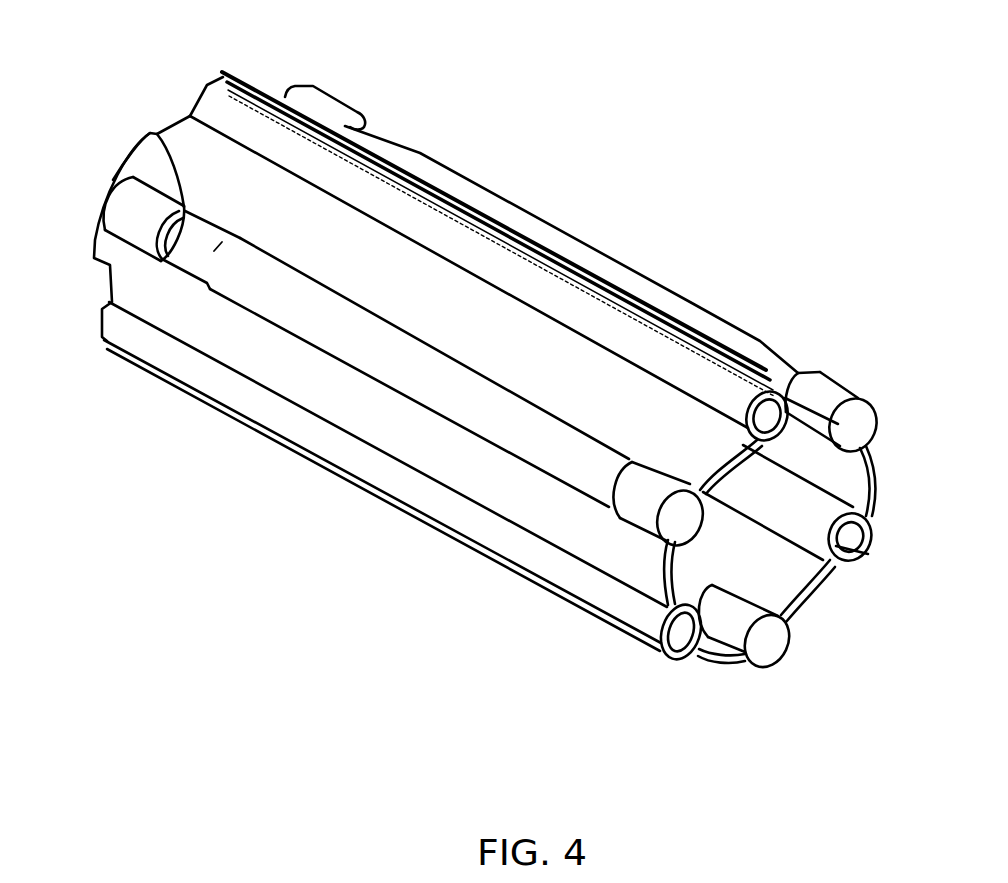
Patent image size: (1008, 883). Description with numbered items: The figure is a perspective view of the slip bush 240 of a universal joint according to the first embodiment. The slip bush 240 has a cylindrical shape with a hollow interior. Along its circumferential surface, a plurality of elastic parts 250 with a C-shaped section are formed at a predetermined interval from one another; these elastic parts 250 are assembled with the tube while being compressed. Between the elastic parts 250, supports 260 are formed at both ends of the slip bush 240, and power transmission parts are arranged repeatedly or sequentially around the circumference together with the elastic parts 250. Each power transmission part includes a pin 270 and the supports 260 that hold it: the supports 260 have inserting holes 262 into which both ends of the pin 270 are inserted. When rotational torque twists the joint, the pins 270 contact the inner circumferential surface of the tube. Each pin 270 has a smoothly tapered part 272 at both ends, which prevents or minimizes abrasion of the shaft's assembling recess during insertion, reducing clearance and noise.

The slip bush 240 is at (664, 194).
The elastic part 250 is at (372, 478).
The support 260 is at (128, 200).
The inserting hole 262 is at (151, 130).
The pin 270 is at (508, 203).
The tapered part 272 is at (185, 253).